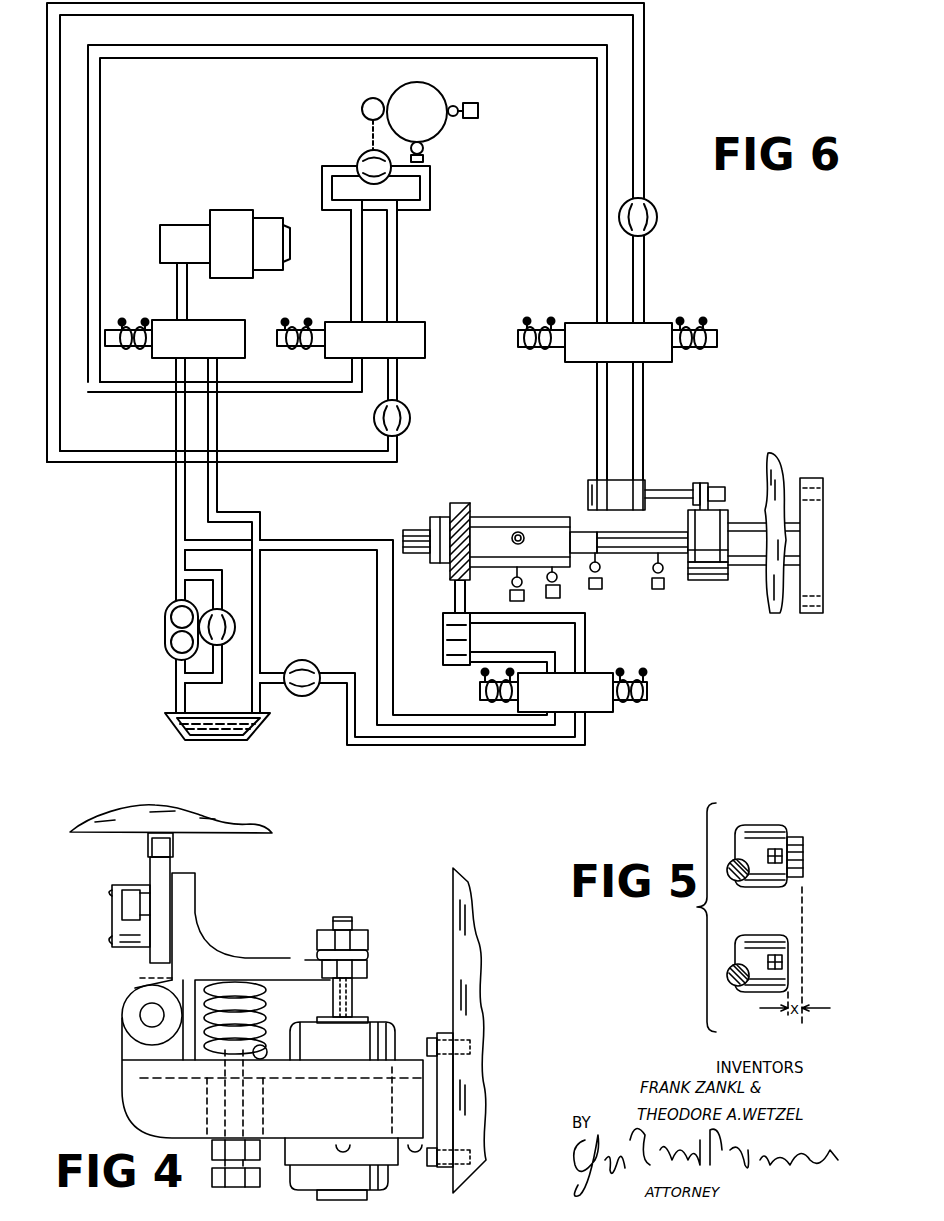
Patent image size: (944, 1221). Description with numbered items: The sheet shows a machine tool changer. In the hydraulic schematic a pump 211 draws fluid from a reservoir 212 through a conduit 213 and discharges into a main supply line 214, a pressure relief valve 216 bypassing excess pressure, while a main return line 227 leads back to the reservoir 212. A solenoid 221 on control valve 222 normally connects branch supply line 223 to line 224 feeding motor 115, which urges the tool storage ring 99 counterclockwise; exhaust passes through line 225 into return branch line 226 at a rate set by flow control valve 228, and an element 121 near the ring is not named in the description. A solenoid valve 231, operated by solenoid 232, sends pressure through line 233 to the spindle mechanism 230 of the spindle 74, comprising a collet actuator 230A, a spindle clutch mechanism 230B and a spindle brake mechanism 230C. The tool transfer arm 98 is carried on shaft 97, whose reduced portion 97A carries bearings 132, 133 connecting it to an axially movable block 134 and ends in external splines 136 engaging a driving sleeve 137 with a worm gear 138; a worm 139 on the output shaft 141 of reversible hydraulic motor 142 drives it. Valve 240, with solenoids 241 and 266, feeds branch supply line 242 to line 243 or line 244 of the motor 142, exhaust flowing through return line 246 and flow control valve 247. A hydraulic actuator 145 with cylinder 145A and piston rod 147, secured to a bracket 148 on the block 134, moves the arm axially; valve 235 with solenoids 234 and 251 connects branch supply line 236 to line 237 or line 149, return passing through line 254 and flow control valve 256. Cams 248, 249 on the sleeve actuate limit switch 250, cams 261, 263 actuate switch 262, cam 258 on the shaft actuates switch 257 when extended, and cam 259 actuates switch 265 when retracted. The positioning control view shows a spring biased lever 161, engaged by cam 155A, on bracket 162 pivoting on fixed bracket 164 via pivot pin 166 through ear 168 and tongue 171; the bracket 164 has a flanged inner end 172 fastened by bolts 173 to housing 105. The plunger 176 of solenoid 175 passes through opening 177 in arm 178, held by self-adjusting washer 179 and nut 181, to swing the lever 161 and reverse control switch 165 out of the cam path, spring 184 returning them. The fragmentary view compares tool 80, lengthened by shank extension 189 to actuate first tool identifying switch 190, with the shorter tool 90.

In FIG. 6, the tool storage ring 99 is at (435, 98).
In FIG. 4, the tool storage ring 99 is at (200, 822).
In FIG. 6, the indicator lamp 121 is at (362, 105).
In FIG. 6, the motor 115 is at (362, 155).
In FIG. 6, the reverse control switch 165 is at (480, 110).
In FIG. 4, the reverse control switch 165 is at (130, 917).
In FIG. 6, the first tool identifying switch 190 is at (425, 160).
In FIG. 6, the spindle mechanism 230 is at (236, 197).
In FIG. 6, the collet actuator 230A is at (265, 232).
In FIG. 6, the spindle clutch mechanism 230B is at (243, 213).
In FIG. 6, the spindle brake mechanism 230C is at (170, 228).
In FIG. 6, the spindle 74 is at (298, 258).
In FIG. 6, the solenoid 232 is at (120, 318).
In FIG. 6, the line 233 is at (188, 303).
In FIG. 6, the solenoid valve 231 is at (220, 317).
In FIG. 6, the line 224 is at (352, 288).
In FIG. 6, the solenoid 221 is at (285, 318).
In FIG. 6, the control valve 222 is at (420, 312).
In FIG. 6, the line 225 is at (398, 240).
In FIG. 6, the branch supply line 223 is at (265, 385).
In FIG. 6, the return line 254 is at (648, 80).
In FIG. 6, the branch supply line 236 is at (597, 178).
In FIG. 6, the flow control valve 256 is at (658, 217).
In FIG. 6, the valve 235 is at (676, 305).
In FIG. 6, the solenoid 251 is at (528, 318).
In FIG. 6, the solenoid 234 is at (707, 320).
In FIG. 6, the line 149 is at (598, 388).
In FIG. 6, the line 237 is at (643, 390).
In FIG. 6, the hydraulic actuator 145 is at (661, 472).
In FIG. 6, the cylinder 145A is at (604, 482).
In FIG. 6, the piston rod 147 is at (665, 490).
In FIG. 6, the bracket 148 is at (705, 483).
In FIG. 6, the worm 139 is at (463, 503).
In FIG. 6, the worm gear 138 is at (450, 503).
In FIG. 6, the driving sleeve 137 is at (478, 527).
In FIG. 6, the cam 263 is at (520, 525).
In FIG. 6, the cam 249 is at (561, 516).
In FIG. 6, the reduced portion of shaft 97A is at (603, 537).
In FIG. 6, the bearing 133 is at (683, 523).
In FIG. 6, the axially movable block 134 is at (708, 530).
In FIG. 6, the tool transfer arm 98 is at (810, 525).
In FIG. 6, the external splines 136 is at (405, 527).
In FIG. 6, the cam 261 is at (526, 538).
In FIG. 6, the flow control valve 228 is at (412, 418).
In FIG. 6, the return branch line 226 is at (300, 462).
In FIG. 6, the main supply line 214 is at (176, 505).
In FIG. 6, the main return line 227 is at (218, 500).
In FIG. 6, the pressure relief valve 216 is at (237, 625).
In FIG. 6, the pump 211 is at (165, 632).
In FIG. 6, the conduit 213 is at (176, 695).
In FIG. 6, the reservoir 212 is at (182, 730).
In FIG. 6, the branch supply line 242 is at (377, 630).
In FIG. 6, the flow control valve 247 is at (312, 668).
In FIG. 6, the output shaft 141 is at (455, 597).
In FIG. 6, the hydraulic motor 142 is at (443, 640).
In FIG. 6, the line 243 is at (487, 653).
In FIG. 6, the line 244 is at (588, 652).
In FIG. 6, the solenoid 241 is at (650, 672).
In FIG. 6, the valve 240 is at (620, 726).
In FIG. 6, the return line 246 is at (410, 740).
In FIG. 6, the solenoid 266 is at (480, 673).
In FIG. 6, the switch 262 is at (510, 597).
In FIG. 6, the cam 248 is at (558, 578).
In FIG. 6, the limit switch 250 is at (560, 590).
In FIG. 6, the cam 259 is at (599, 571).
In FIG. 6, the cam 258 is at (653, 569).
In FIG. 6, the limit switch 257 is at (665, 584).
In FIG. 6, the limit switch 265 is at (599, 589).
In FIG. 6, the shaft 97 is at (760, 553).
In FIG. 6, the bearing 132 is at (735, 572).
In FIG. 4, the cam 155A is at (175, 848).
In FIG. 4, the spring biased lever 161 is at (160, 875).
In FIG. 4, the bracket 162 is at (183, 908).
In FIG. 4, the ear 168 is at (130, 992).
In FIG. 4, the pivot pin 166 is at (150, 1013).
In FIG. 4, the tongue 171 is at (138, 1047).
In FIG. 4, the fixed bracket 164 is at (140, 1072).
In FIG. 4, the spring 184 is at (262, 1010).
In FIG. 4, the plunger 176 is at (343, 916).
In FIG. 4, the nut 181 is at (365, 935).
In FIG. 4, the self-adjusting washer 179 is at (370, 952).
In FIG. 4, the arm member 178 is at (368, 973).
In FIG. 4, the enlarged opening 177 is at (310, 970).
In FIG. 4, the flanged inner end 172 is at (440, 1030).
In FIG. 4, the housing portion 105 is at (470, 955).
In FIG. 4, the bolts 173 is at (485, 1045).
In FIG. 4, the solenoid 175 is at (398, 1180).
In FIG. 5, the tool 80 is at (750, 840).
In FIG. 5, the shank extension 189 is at (797, 850).
In FIG. 5, the tool 90 is at (742, 945).